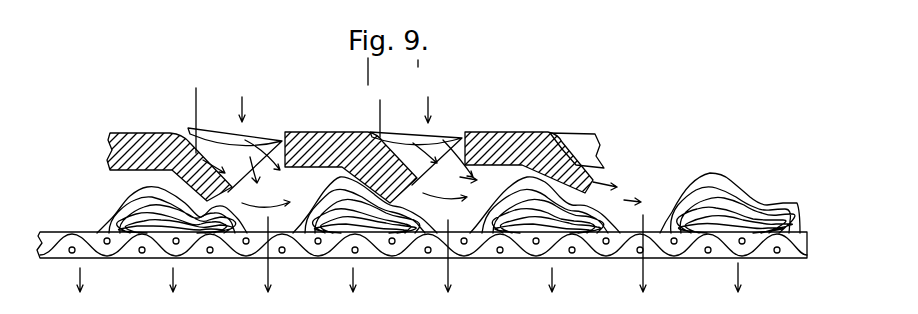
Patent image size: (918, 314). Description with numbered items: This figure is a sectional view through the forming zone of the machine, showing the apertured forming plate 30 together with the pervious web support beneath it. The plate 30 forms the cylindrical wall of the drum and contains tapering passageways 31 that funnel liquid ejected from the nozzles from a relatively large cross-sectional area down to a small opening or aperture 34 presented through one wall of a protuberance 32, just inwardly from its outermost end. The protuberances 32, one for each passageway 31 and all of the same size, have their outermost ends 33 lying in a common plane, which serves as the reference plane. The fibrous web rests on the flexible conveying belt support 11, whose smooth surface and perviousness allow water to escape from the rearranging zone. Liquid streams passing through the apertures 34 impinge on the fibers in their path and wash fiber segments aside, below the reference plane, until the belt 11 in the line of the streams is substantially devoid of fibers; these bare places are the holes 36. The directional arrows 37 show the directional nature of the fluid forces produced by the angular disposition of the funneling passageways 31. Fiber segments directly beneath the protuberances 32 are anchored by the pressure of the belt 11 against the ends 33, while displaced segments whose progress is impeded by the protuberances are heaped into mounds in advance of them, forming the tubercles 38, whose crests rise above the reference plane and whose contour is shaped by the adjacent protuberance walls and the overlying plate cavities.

The flexible conveying belt support 11 is at (331, 261).
The apertured plate 30 is at (160, 115).
The passageways 31 is at (245, 142).
The protuberances 32 is at (140, 243).
The outermost ends 33 is at (205, 233).
The opening or aperture 34 is at (430, 152).
The holes 36 is at (653, 228).
The directional arrows 37 is at (222, 143).
The tubercles 38 is at (515, 145).